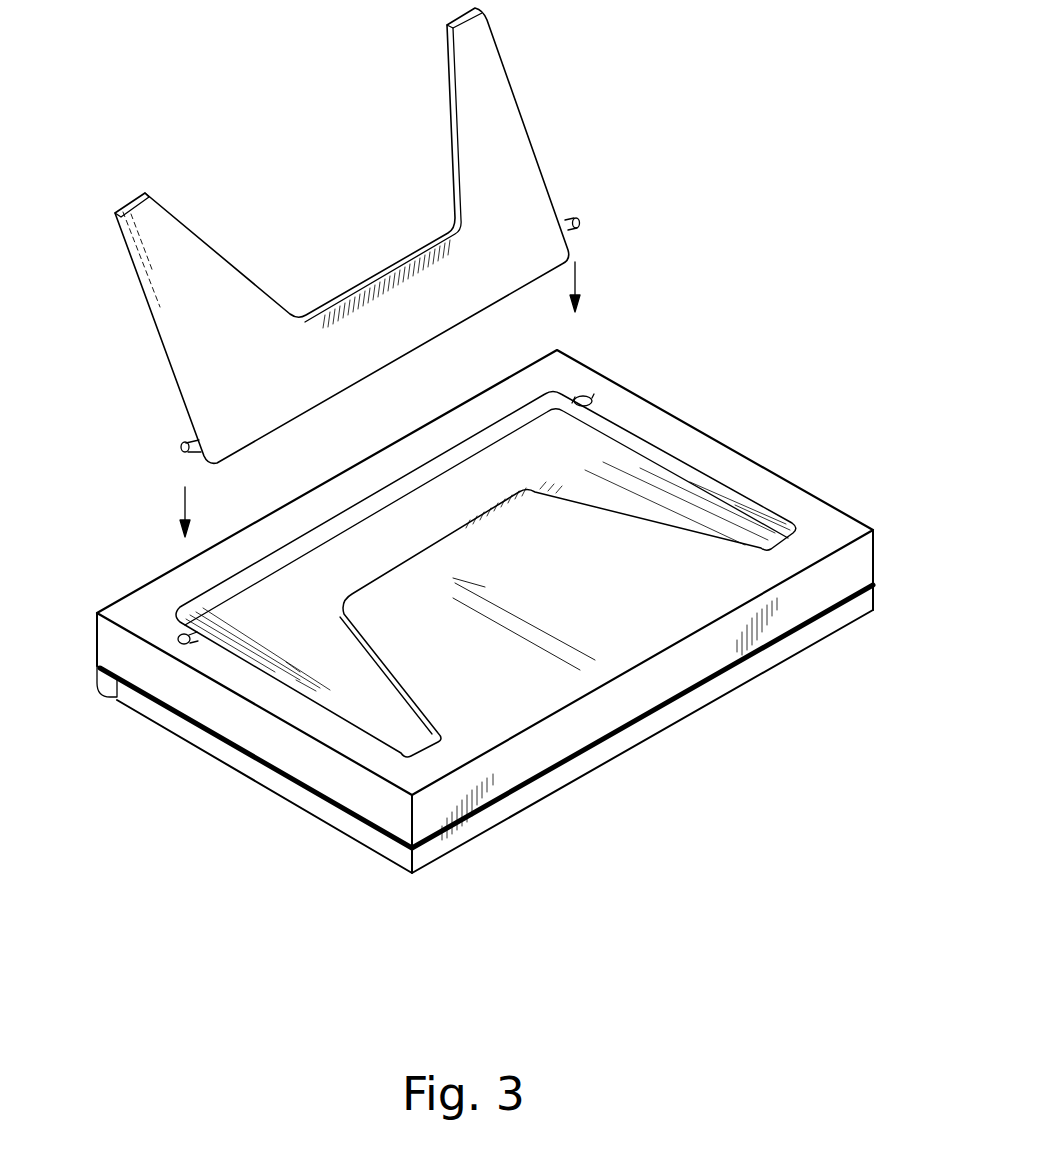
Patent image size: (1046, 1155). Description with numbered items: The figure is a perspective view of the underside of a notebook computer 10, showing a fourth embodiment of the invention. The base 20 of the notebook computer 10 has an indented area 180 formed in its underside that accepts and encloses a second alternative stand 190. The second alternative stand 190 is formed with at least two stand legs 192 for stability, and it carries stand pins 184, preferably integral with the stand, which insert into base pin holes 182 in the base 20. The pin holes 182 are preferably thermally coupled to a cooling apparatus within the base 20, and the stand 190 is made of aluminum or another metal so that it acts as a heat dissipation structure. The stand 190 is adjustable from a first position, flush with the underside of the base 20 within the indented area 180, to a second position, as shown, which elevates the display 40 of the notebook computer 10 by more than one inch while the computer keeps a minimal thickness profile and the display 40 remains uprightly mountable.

The notebook computer 10 is at (846, 460).
The base 20 is at (713, 653).
The display 40 is at (322, 808).
The indented area 180 is at (300, 647).
The base pin holes 182 is at (178, 635).
The stand pins 184 is at (568, 220).
The second alternative stand 190 is at (212, 382).
The stand legs 192 is at (472, 127).